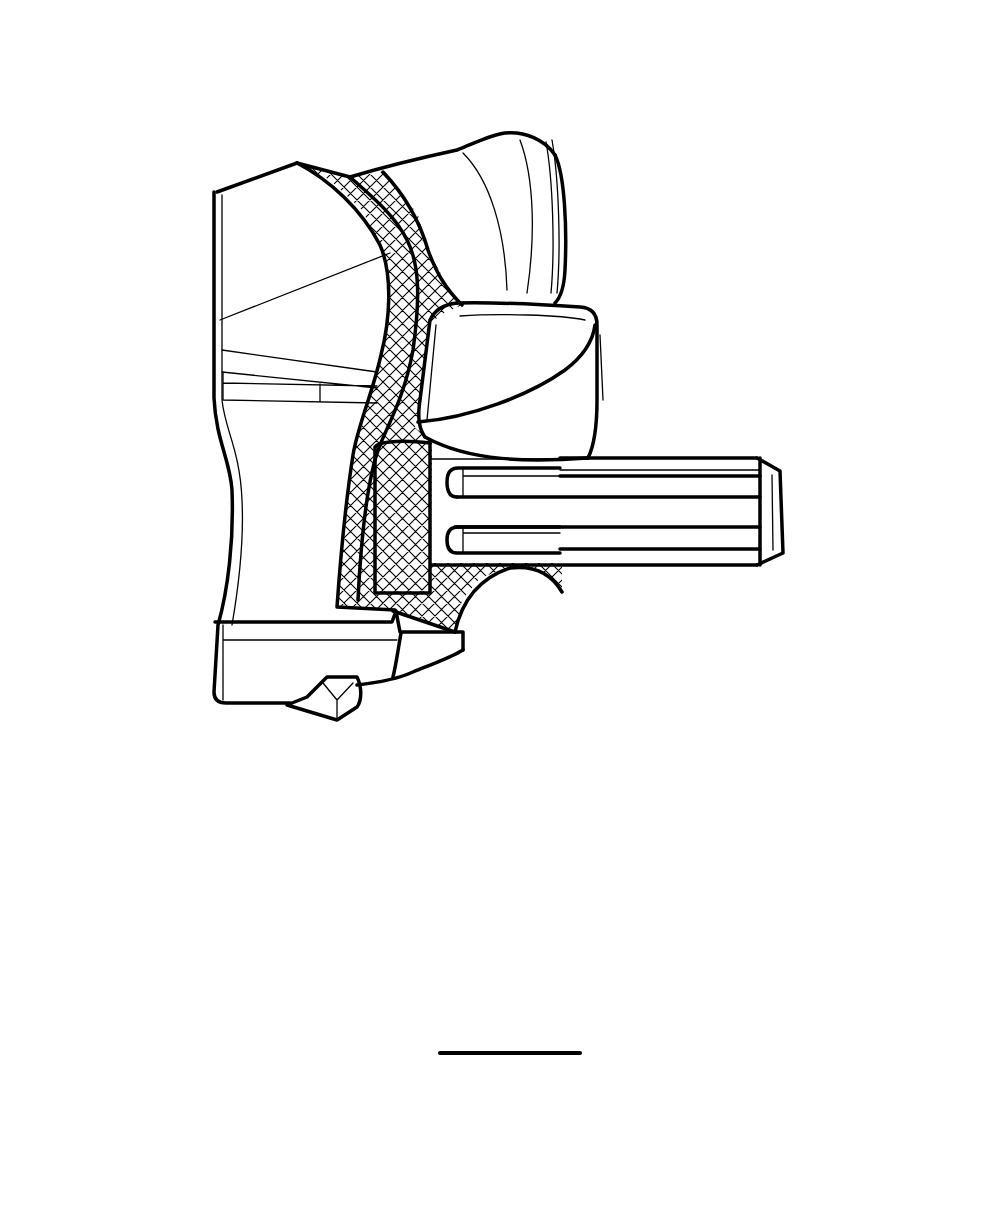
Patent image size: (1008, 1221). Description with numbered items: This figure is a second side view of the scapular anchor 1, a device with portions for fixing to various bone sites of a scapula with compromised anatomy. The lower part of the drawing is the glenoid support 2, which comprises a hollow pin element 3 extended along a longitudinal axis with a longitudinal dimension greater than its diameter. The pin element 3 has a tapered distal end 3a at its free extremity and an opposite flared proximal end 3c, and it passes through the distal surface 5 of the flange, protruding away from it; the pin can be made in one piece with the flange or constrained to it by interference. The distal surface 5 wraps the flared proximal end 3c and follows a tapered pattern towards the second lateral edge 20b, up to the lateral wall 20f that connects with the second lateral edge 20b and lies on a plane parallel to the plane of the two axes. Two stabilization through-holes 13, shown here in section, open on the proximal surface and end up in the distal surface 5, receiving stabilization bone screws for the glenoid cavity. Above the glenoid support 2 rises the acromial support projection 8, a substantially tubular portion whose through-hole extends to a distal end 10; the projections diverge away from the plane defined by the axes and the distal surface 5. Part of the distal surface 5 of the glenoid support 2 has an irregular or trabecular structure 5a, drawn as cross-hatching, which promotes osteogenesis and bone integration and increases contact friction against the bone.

The anchor 1 is at (180, 883).
The glenoid support 2 is at (456, 713).
The pin element 3 is at (627, 530).
The tapered distal end 3a is at (773, 523).
The flared proximal end 3c is at (427, 542).
The distal surface 5 is at (353, 197).
The trabecular structure 5a is at (390, 297).
The acromial support projection 8 is at (398, 142).
The distal end 10 is at (582, 206).
The stabilization through-holes 13 is at (512, 348).
The second lateral edge 20b is at (231, 505).
The lateral wall 20f is at (277, 570).